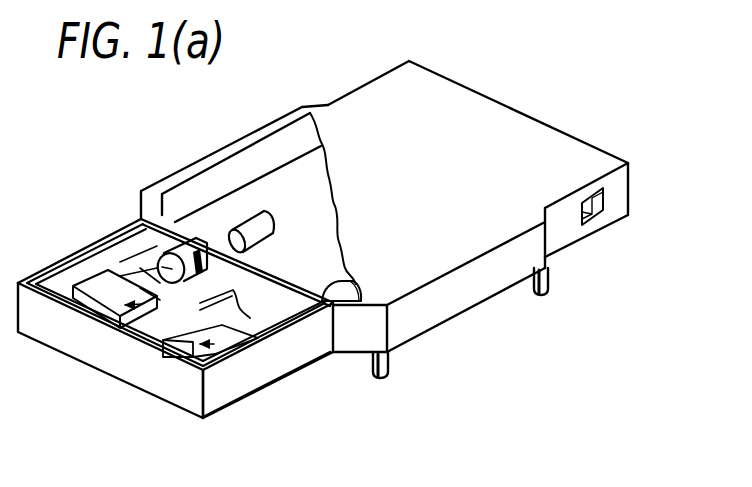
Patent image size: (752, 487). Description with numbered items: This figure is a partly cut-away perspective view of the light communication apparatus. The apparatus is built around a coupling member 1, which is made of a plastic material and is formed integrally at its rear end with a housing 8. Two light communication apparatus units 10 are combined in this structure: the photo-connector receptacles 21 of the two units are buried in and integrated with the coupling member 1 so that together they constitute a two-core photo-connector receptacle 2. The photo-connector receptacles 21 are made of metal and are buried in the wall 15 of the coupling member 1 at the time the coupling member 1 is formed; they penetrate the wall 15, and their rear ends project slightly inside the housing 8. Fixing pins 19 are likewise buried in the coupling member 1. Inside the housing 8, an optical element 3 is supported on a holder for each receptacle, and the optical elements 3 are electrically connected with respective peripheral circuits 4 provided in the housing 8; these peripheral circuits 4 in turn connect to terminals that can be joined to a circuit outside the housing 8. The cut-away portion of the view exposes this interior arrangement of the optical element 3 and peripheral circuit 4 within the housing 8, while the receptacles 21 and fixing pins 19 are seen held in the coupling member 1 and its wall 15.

The coupling member 1 is at (483, 283).
The two-core photo-connector receptacle 2 is at (521, 137).
The optical element 3 is at (133, 229).
The peripheral circuit 4 is at (98, 286).
The housing 8 is at (285, 360).
The light communication apparatus unit 10 is at (157, 352).
The wall 15 is at (170, 250).
The fixing pin 19 is at (389, 365).
The photo-connector receptacle 21 is at (265, 212).